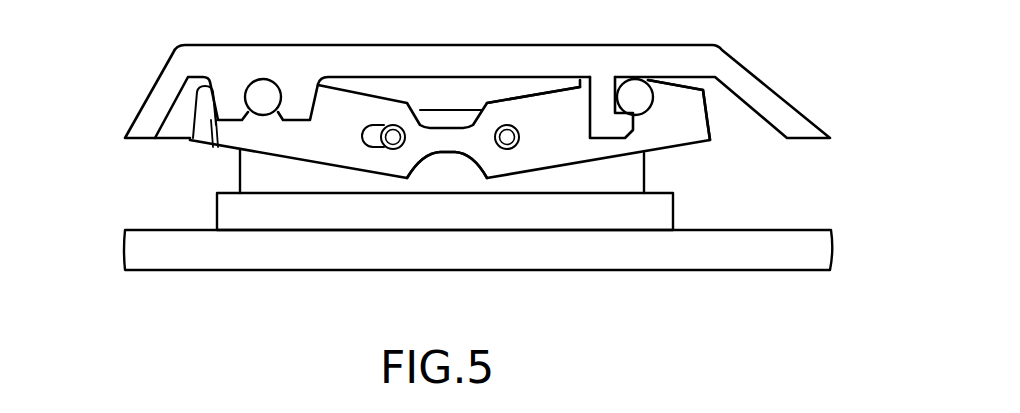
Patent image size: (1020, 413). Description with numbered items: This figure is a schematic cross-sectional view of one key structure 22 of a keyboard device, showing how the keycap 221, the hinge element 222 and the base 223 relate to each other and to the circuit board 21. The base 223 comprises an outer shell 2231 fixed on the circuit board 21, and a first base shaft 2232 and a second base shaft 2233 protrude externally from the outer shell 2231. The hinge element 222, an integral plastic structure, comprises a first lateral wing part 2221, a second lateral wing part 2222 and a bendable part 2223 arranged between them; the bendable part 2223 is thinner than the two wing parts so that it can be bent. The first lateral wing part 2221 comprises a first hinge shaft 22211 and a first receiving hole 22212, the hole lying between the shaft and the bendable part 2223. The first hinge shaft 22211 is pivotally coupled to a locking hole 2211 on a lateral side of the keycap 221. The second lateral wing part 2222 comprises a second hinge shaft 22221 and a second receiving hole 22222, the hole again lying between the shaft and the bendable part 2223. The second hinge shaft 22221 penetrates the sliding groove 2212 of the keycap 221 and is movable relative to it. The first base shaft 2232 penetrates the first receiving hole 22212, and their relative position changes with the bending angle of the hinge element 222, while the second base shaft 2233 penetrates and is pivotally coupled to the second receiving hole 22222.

The circuit board 21 is at (726, 244).
The key structure 22 is at (82, 227).
The keycap 221 is at (339, 38).
The locking hole 2211 is at (263, 93).
The first hinge shaft 22211 is at (243, 87).
The sliding groove 2212 is at (635, 97).
The second hinge shaft 22221 is at (637, 95).
The second lateral wing part 2222 is at (683, 120).
The hinge element 222 is at (692, 148).
The first lateral wing part 2221 is at (238, 135).
The first receiving hole 22212 is at (383, 133).
The first base shaft 2232 is at (393, 137).
The second receiving hole 22222 is at (518, 127).
The outer shell 2231 is at (550, 180).
The second base shaft 2233 is at (517, 140).
The bendable part 2223 is at (447, 140).
The base 223 is at (352, 206).